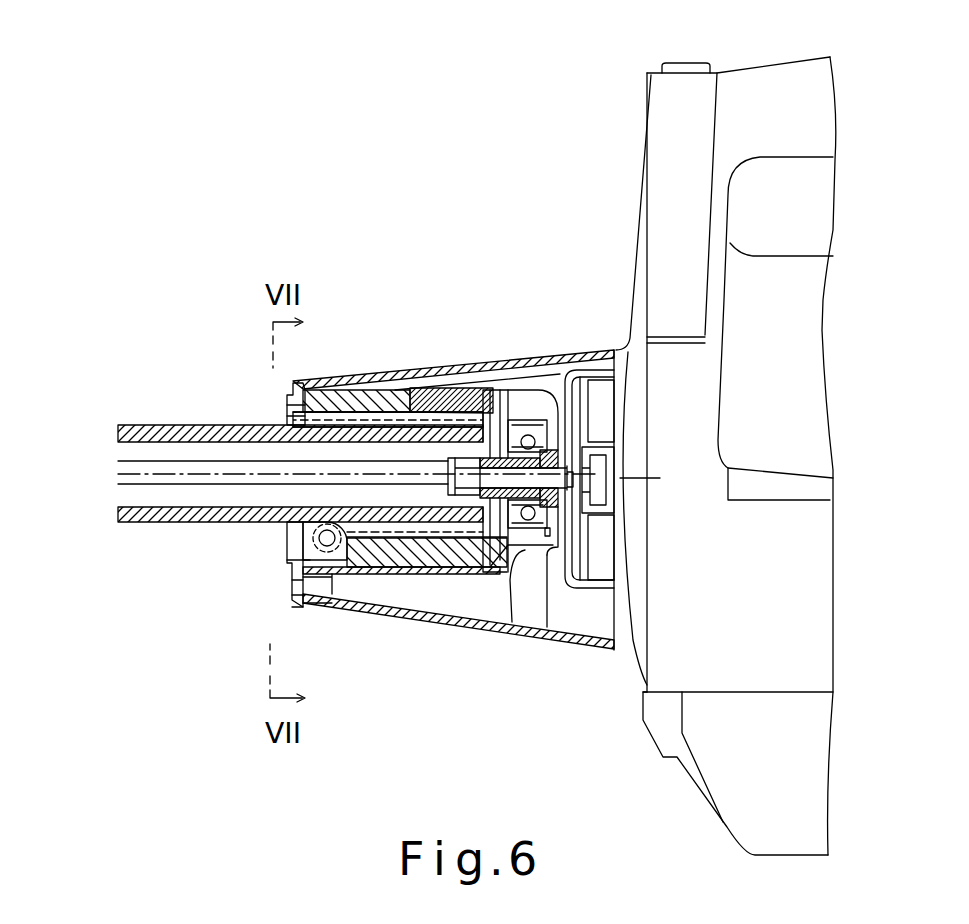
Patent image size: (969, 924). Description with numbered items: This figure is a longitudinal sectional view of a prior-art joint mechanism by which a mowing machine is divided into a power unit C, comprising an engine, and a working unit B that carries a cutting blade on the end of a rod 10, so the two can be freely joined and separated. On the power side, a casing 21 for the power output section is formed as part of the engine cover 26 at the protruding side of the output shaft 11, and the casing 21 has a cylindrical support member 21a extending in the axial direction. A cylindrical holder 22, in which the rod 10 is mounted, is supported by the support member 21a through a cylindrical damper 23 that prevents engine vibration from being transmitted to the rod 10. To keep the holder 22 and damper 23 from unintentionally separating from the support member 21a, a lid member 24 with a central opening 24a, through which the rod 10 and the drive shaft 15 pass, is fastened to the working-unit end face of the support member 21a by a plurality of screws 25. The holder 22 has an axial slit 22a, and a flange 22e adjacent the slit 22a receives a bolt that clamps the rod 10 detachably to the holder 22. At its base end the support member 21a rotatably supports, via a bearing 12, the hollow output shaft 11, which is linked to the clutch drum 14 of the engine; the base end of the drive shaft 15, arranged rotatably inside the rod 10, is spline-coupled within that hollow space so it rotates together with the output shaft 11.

The rod 10 is at (162, 522).
The drive shaft 15 is at (225, 475).
The lid member 24 is at (287, 418).
The opening 24a is at (290, 520).
The screws 25 is at (292, 597).
The holder 22 is at (362, 395).
The slit 22a is at (392, 580).
The flange 22e is at (313, 600).
The damper 23 is at (455, 395).
The support member 21a is at (415, 375).
The bearing 12 is at (530, 434).
The output shaft 11 is at (511, 624).
The clutch drum 14 is at (600, 347).
The casing 21 is at (637, 253).
The engine cover 26 is at (662, 150).
The power unit C is at (772, 50).
The working unit B is at (168, 410).